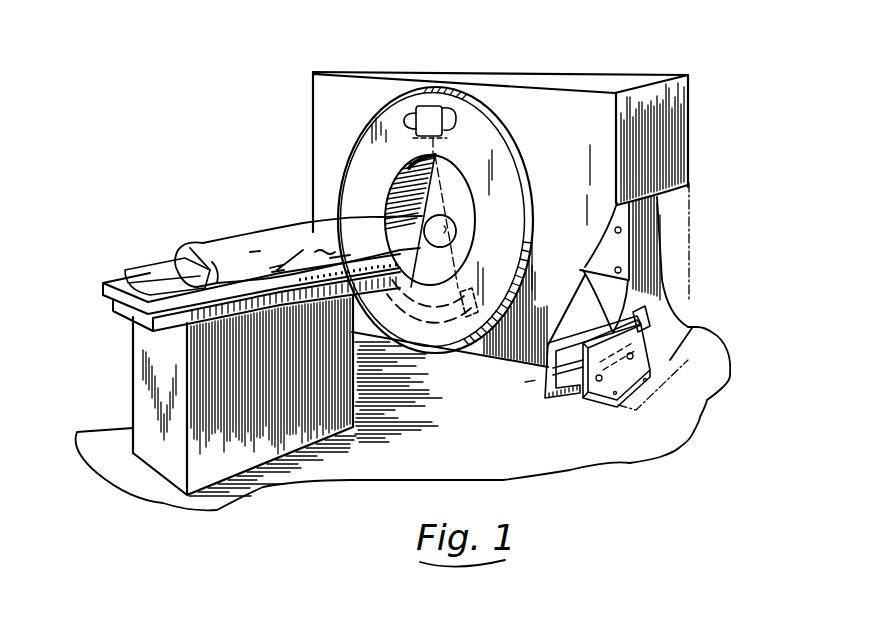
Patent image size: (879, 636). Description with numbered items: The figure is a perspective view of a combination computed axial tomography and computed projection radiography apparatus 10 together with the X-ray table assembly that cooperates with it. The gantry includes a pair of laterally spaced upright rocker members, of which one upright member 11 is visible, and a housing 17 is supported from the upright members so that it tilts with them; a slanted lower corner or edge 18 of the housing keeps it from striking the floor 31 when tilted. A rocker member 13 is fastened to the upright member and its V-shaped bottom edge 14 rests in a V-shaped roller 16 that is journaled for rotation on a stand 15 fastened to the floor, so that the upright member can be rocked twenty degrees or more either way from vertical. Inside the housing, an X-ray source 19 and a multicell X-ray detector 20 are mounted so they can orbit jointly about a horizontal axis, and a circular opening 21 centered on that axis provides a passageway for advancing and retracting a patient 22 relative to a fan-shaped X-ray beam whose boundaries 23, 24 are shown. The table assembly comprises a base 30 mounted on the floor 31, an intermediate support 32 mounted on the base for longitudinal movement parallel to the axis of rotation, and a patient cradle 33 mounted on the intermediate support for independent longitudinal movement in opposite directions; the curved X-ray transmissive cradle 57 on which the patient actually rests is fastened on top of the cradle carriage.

The combination computed axial tomography and computed projection radiography appara 10 is at (657, 53).
The upright rocker member 11 is at (650, 220).
The rocker member 13 is at (550, 363).
The bottom edge 14 is at (563, 398).
The stand 15 is at (583, 270).
The roller 16 is at (588, 408).
The housing 17 is at (642, 110).
The lower corner or edge 18 is at (720, 350).
The X-ray source 19 is at (450, 105).
The multicell X-ray detector 20 is at (425, 310).
The circular opening 21 is at (458, 187).
The patient 22 is at (267, 237).
The X-ray beam boundary 23 is at (405, 193).
The X-ray beam boundary 24 is at (442, 205).
The base 30 is at (145, 392).
The floor 31 is at (322, 453).
The intermediate support 32 is at (116, 319).
The patient cradle 33 is at (117, 274).
The X-ray transmissive cradle 57 is at (163, 267).